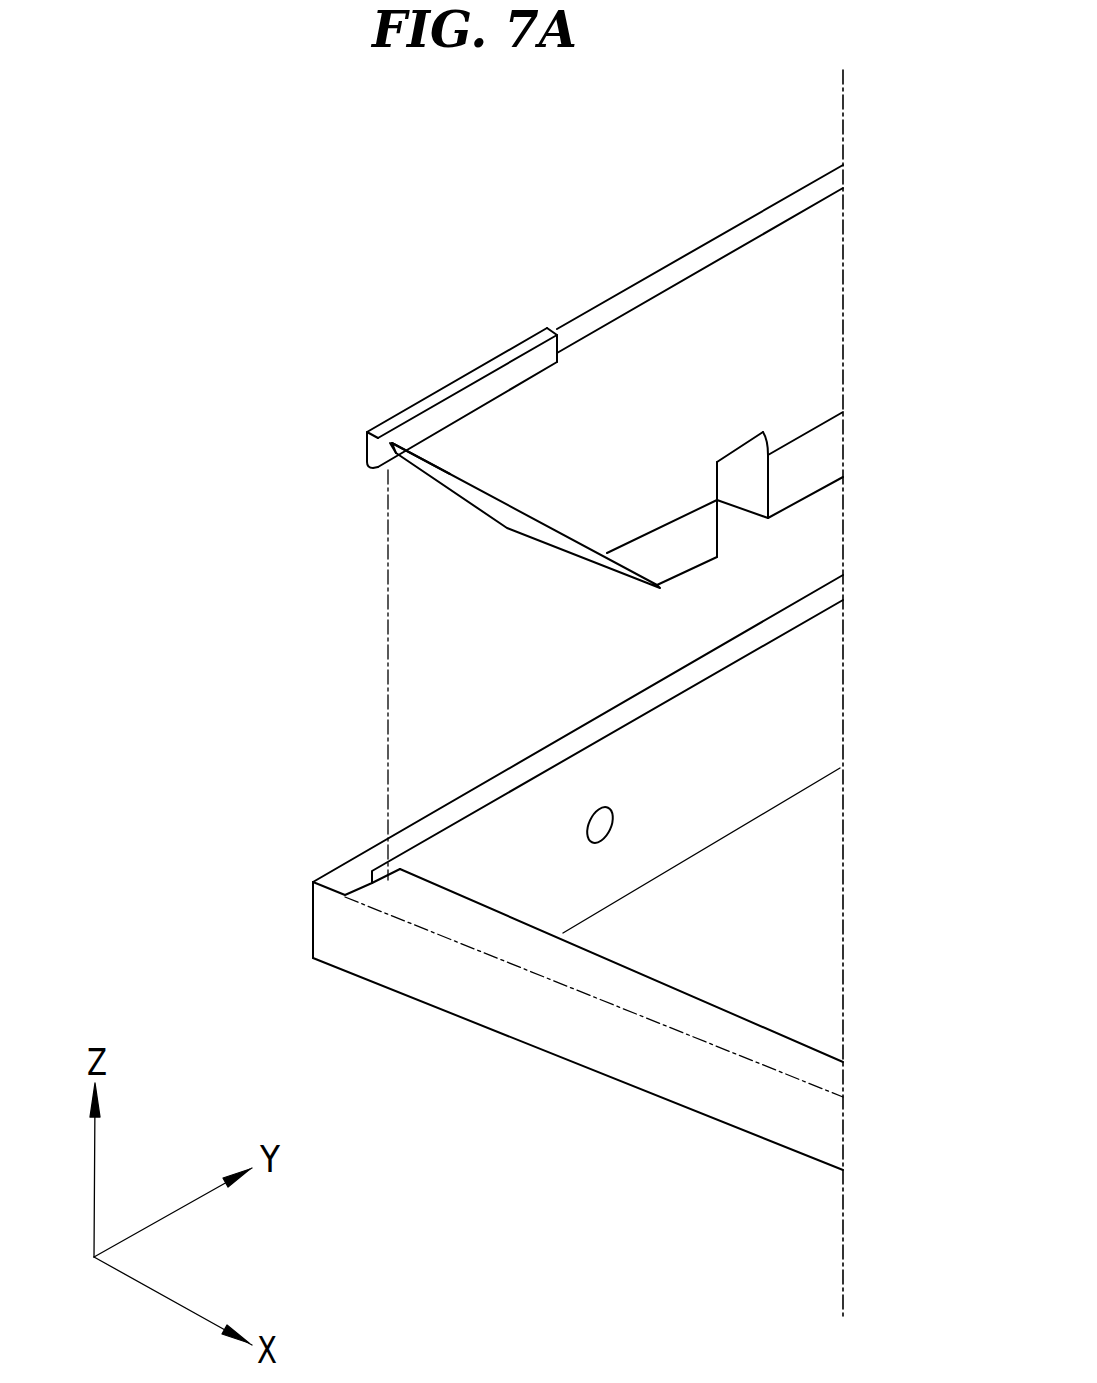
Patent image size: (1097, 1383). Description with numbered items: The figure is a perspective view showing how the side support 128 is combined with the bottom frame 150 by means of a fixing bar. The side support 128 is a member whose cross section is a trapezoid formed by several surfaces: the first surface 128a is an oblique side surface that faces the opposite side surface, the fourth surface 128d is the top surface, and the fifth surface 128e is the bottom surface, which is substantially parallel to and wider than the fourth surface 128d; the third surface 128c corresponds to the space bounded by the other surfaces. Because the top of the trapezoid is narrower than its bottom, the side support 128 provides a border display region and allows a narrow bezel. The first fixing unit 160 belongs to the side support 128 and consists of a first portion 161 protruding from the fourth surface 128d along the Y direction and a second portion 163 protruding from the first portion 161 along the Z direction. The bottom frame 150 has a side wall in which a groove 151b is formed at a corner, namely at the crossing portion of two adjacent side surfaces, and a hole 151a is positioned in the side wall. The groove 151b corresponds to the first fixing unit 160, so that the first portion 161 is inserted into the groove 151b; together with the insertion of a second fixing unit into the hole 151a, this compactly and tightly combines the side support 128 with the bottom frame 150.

The first fixing unit 160 is at (430, 177).
The first portion 161 is at (365, 433).
The second portion 163 is at (510, 345).
The side support 128 is at (483, 708).
The first surface 128a is at (603, 473).
The third surface 128c is at (448, 479).
The fourth surface 128d is at (363, 465).
The fifth surface 128e is at (695, 568).
The bottom frame 150 is at (507, 1007).
The hole 151a is at (637, 830).
The groove 151b is at (338, 890).